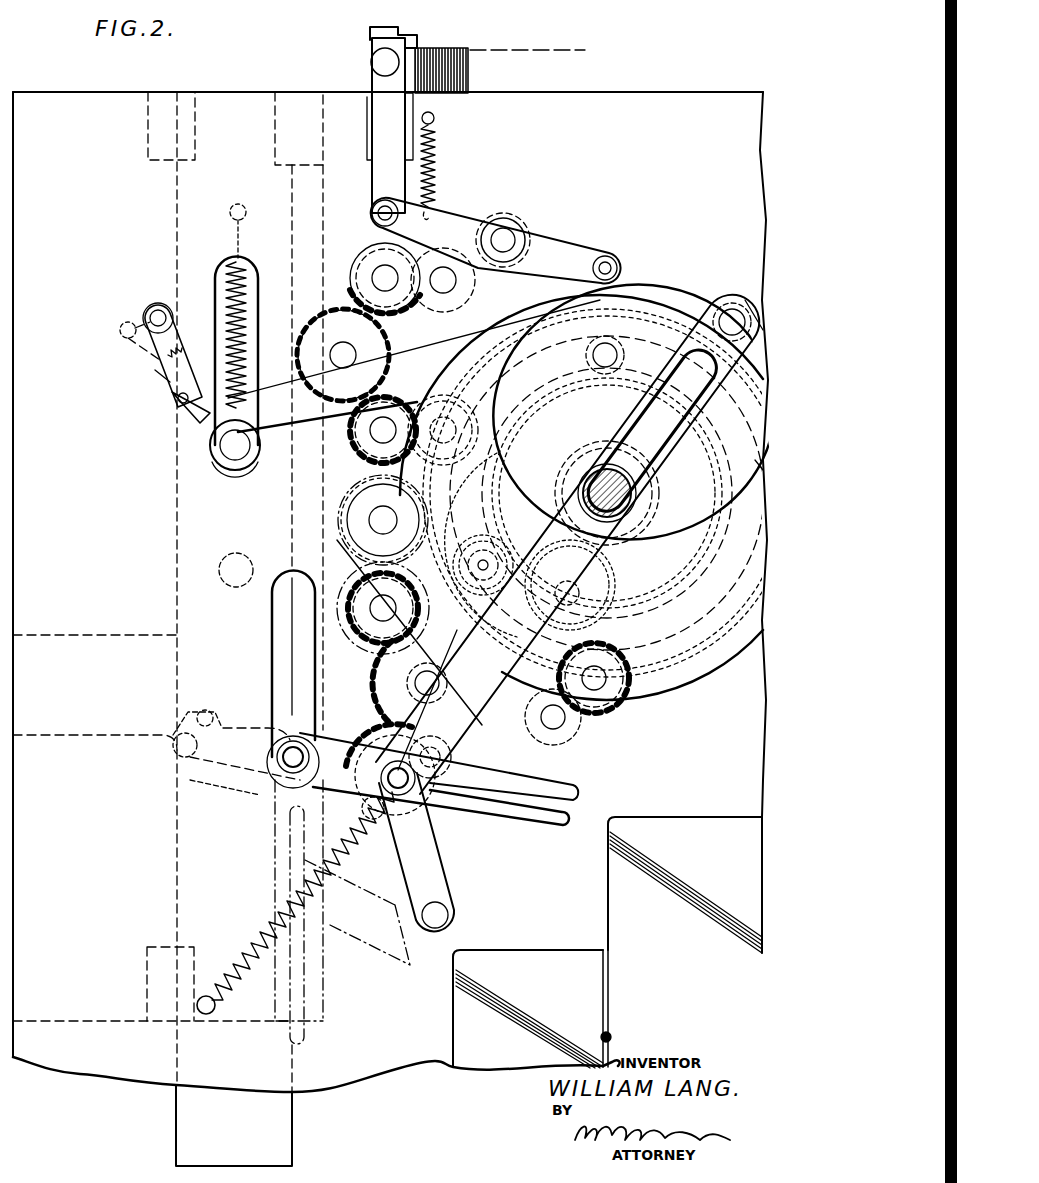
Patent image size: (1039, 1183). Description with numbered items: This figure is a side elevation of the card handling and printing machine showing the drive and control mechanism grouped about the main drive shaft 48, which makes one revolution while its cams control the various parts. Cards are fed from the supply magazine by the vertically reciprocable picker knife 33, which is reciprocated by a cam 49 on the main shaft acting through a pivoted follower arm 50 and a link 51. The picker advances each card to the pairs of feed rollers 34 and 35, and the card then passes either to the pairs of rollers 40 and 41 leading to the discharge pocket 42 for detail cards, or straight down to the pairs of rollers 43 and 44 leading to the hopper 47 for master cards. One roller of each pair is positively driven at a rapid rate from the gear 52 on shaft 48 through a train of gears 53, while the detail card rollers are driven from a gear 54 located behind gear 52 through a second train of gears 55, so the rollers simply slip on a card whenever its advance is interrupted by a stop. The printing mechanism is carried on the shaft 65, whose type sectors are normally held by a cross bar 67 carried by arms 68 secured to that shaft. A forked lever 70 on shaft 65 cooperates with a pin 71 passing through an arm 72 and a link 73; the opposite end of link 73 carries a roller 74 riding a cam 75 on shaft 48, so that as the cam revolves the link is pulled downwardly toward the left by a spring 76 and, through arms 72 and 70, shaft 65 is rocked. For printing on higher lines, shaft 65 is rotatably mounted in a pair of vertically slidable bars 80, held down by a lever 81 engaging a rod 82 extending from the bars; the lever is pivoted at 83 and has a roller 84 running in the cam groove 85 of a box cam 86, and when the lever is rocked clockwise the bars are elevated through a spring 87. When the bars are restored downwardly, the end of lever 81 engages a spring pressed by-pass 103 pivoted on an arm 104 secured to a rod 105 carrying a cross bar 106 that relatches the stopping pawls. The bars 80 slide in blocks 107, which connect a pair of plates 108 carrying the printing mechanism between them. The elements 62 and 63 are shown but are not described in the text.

The picker knife 33 is at (417, 40).
The feed rollers 34 is at (430, 300).
The feed rollers 35 is at (352, 452).
The rollers 40 is at (505, 635).
The rollers 41 is at (572, 725).
The discharge pocket 42 is at (685, 885).
The rollers 43 is at (390, 572).
The rollers 44 is at (378, 728).
The hopper 47 is at (528, 1009).
The main drive shaft 48 is at (607, 493).
The cam 49 is at (530, 250).
The follower arm 50 is at (478, 215).
The link 51 is at (378, 172).
The gear 52 is at (452, 455).
The train of gears 53 is at (400, 335).
The gear 54 is at (485, 520).
The train of gears 55 is at (535, 540).
The strip 62 is at (608, 972).
The pin 63 is at (611, 1034).
The shaft 65 is at (270, 745).
The cross bar 67 is at (178, 750).
The arms 68 is at (220, 770).
The forked lever 70 is at (505, 780).
The pin 71 is at (430, 808).
The arm 72 is at (445, 855).
The link 73 is at (571, 522).
The roller 74 is at (735, 305).
The cam 75 is at (596, 468).
The spring 76 is at (255, 960).
The vertically slidable bars 80 is at (177, 490).
The lever 81 is at (285, 395).
The rod 82 is at (232, 470).
The pivot 83 is at (740, 305).
The roller 84 is at (612, 340).
The cam groove 85 is at (700, 600).
The box cam 86 is at (728, 648).
The spring 87 is at (245, 268).
The by-pass 103 is at (180, 420).
The arm 104 is at (152, 355).
The rod 105 is at (156, 300).
The cross bar 106 is at (120, 325).
The blocks 107 is at (275, 150).
The plates 108 is at (95, 1025).